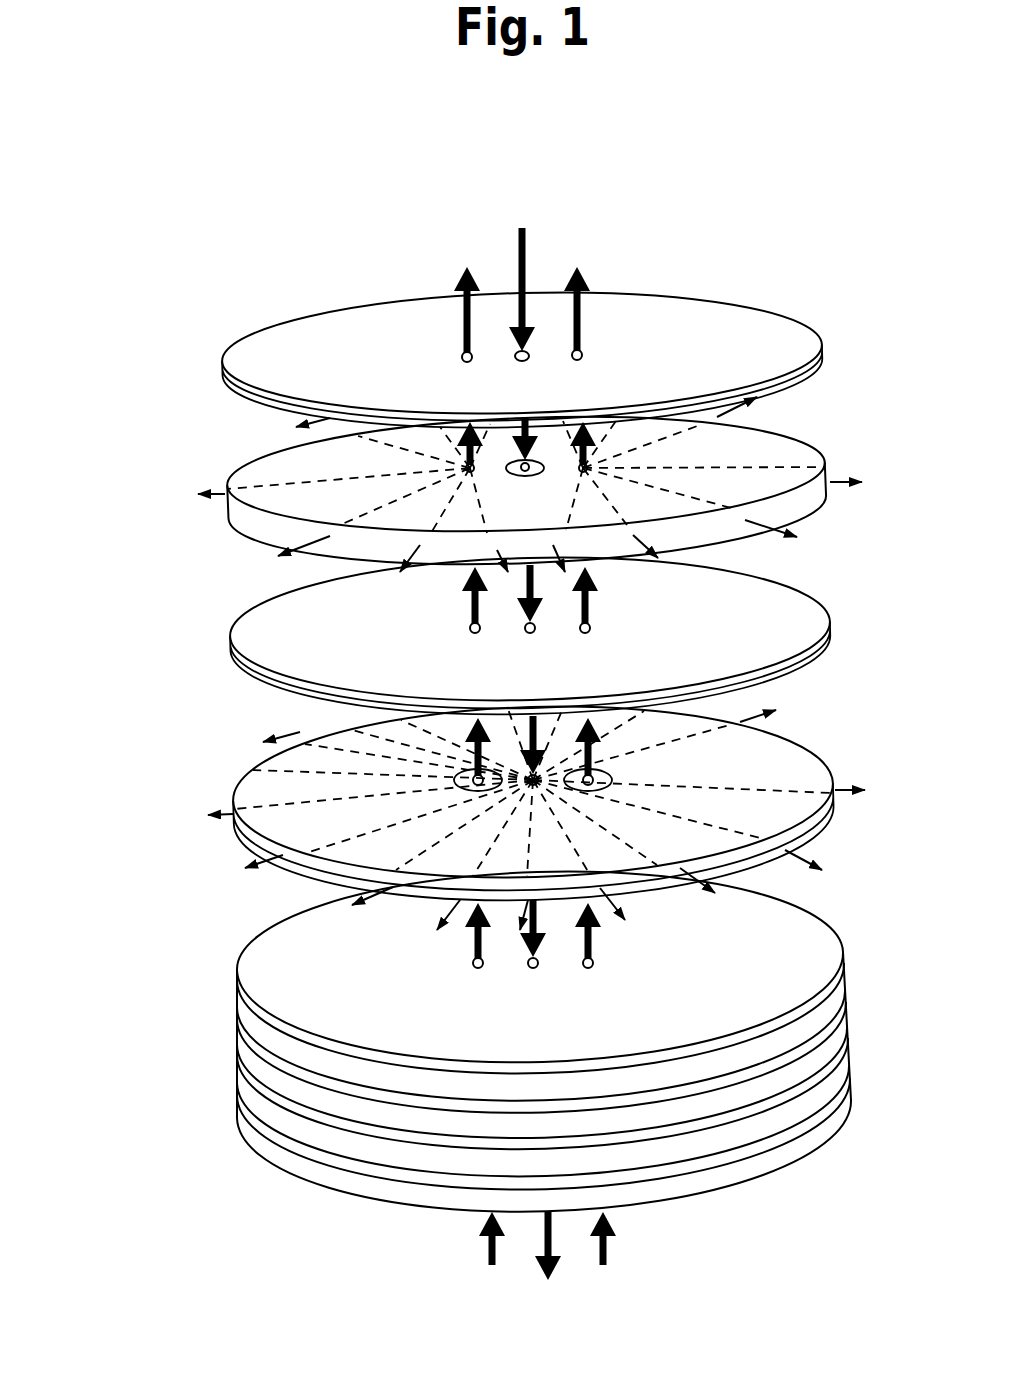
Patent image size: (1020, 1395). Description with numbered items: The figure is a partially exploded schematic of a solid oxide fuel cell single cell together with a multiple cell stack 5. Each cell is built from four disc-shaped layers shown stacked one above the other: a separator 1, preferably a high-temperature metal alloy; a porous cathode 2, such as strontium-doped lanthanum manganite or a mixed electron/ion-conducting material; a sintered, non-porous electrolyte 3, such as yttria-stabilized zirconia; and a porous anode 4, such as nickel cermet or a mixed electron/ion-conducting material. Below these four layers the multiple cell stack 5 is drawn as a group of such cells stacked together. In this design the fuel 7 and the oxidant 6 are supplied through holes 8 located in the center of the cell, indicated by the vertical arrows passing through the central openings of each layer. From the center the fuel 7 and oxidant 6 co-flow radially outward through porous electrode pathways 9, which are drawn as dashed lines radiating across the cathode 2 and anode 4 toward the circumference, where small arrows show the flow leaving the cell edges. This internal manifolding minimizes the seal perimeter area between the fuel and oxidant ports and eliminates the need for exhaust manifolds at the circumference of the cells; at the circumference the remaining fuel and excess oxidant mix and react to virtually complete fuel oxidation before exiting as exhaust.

The separator 1 is at (313, 343).
The cathode 2 is at (290, 460).
The electrolyte 3 is at (268, 625).
The anode 4 is at (231, 781).
The multiple cell stack 5 is at (255, 1025).
The oxidant 6 is at (563, 320).
The fuel 7 is at (532, 238).
The holes 8 is at (540, 352).
The porous electrode pathways 9 is at (333, 490).